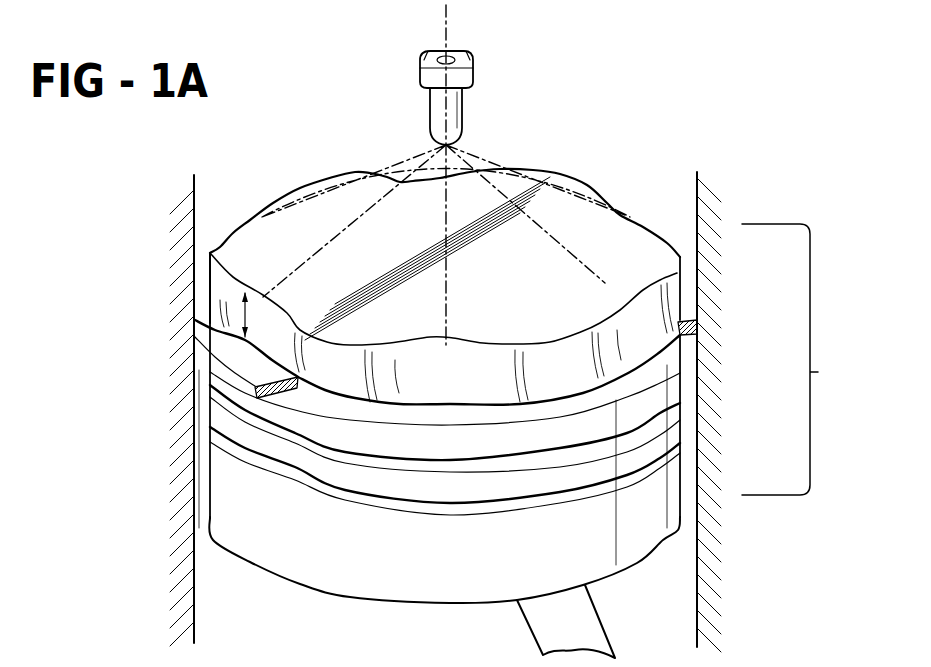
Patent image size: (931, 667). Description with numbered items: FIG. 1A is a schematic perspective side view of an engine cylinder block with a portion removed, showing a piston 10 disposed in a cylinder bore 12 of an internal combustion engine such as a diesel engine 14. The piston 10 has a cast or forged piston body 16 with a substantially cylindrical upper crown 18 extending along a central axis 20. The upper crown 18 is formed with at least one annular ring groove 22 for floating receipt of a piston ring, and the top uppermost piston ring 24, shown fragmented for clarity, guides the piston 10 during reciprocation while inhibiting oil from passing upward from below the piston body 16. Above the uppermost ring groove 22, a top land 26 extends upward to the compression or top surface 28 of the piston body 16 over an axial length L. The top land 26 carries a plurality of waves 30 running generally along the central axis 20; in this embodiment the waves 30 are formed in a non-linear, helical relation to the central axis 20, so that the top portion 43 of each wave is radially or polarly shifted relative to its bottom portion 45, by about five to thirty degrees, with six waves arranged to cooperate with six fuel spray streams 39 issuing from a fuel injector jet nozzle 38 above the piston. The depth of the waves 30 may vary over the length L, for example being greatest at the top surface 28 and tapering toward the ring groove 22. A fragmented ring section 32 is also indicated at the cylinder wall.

The piston 10 is at (637, 117).
The cylinder bore 12 is at (693, 578).
The diesel engine 14 is at (227, 187).
The piston body 16 is at (657, 513).
The upper crown 18 is at (794, 359).
The central axis 20 is at (449, 13).
The annular ring groove 22 is at (305, 397).
The top uppermost piston ring 24 is at (690, 297).
The top land 26 is at (207, 275).
The top surface 28 is at (647, 250).
The waves 30 is at (323, 182).
The top ring 32 is at (677, 278).
The fuel injector jet nozzle 38 is at (462, 112).
The fuel spray streams 39 is at (327, 193).
The top portion 43 is at (350, 342).
The bottom portion 45 is at (357, 403).
The axial length L is at (243, 303).